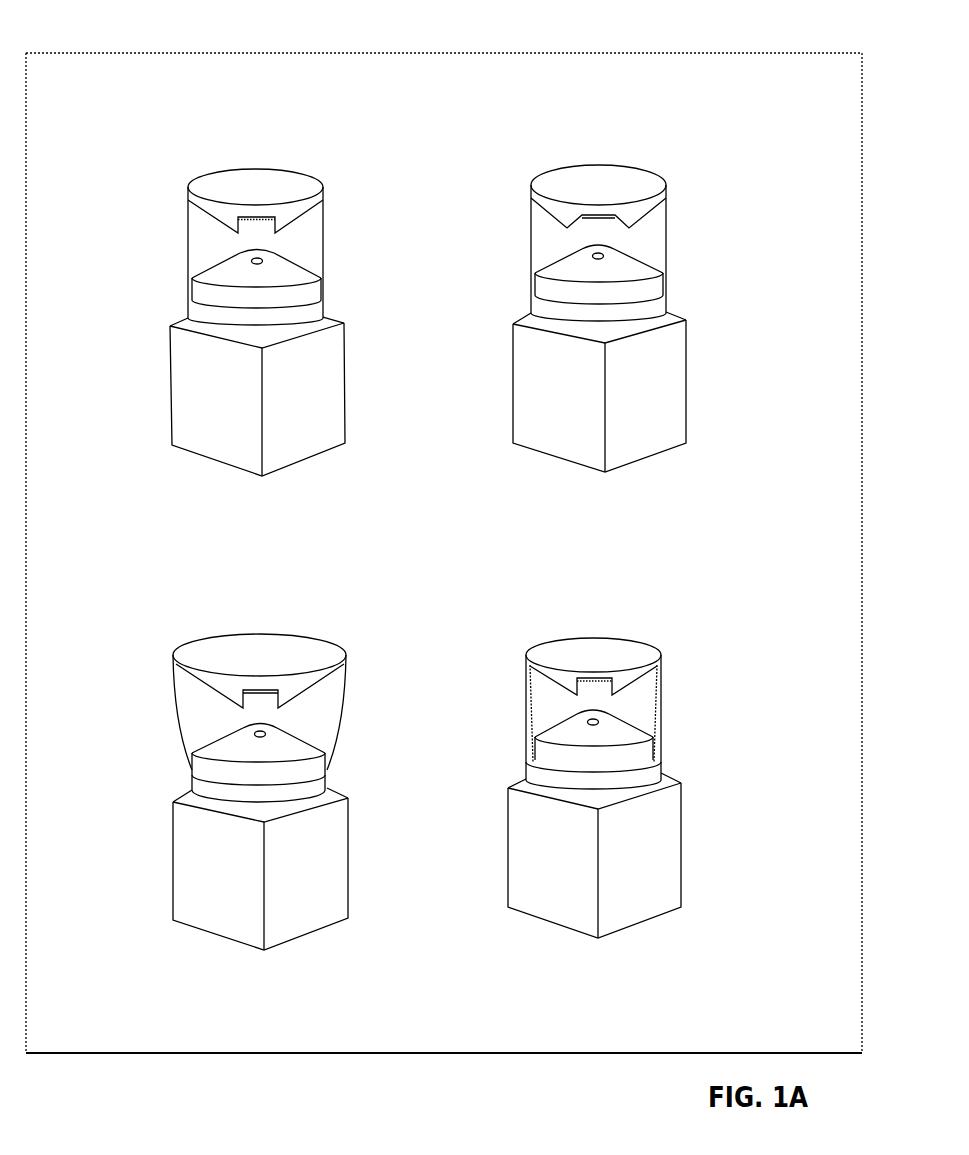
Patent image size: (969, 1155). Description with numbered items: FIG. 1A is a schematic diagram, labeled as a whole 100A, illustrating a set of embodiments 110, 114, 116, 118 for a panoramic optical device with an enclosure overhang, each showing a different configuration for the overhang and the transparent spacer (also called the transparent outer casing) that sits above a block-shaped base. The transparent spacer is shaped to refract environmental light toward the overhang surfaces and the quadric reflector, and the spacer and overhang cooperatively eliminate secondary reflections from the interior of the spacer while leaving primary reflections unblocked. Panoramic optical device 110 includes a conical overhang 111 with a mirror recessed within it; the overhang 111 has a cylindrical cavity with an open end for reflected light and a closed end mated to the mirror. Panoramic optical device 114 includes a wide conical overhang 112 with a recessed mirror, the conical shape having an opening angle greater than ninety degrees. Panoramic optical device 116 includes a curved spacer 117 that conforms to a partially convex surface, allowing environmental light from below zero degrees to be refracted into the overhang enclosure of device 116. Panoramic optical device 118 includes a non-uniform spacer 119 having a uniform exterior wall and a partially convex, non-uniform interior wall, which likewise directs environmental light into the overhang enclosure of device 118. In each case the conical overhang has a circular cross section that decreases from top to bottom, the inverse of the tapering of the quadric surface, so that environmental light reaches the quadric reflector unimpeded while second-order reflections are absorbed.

The panoramic optical device variants 100A is at (795, 33).
The panoramic optical device 110 is at (253, 325).
The conical overhang 111 is at (188, 200).
The wide conical overhang 112 is at (690, 135).
The panoramic optical device 114 is at (619, 323).
The panoramic optical device 116 is at (252, 801).
The curved spacer 117 is at (173, 700).
The panoramic optical device 118 is at (593, 798).
The non-uniform spacer 119 is at (692, 618).